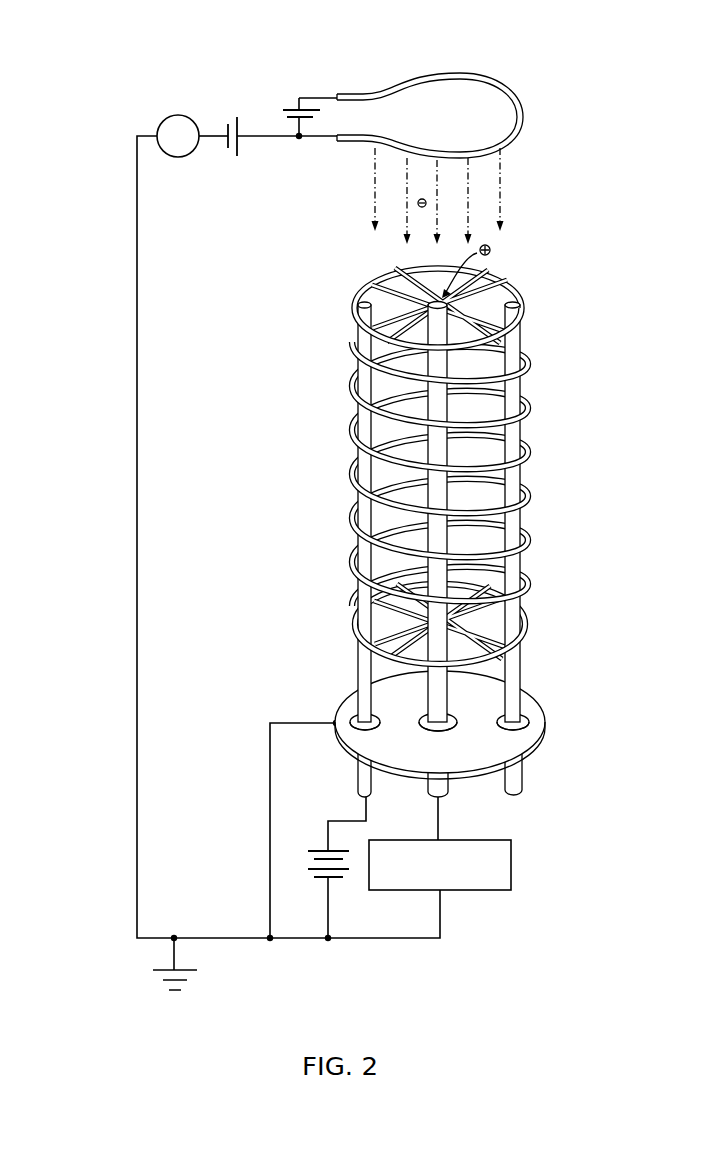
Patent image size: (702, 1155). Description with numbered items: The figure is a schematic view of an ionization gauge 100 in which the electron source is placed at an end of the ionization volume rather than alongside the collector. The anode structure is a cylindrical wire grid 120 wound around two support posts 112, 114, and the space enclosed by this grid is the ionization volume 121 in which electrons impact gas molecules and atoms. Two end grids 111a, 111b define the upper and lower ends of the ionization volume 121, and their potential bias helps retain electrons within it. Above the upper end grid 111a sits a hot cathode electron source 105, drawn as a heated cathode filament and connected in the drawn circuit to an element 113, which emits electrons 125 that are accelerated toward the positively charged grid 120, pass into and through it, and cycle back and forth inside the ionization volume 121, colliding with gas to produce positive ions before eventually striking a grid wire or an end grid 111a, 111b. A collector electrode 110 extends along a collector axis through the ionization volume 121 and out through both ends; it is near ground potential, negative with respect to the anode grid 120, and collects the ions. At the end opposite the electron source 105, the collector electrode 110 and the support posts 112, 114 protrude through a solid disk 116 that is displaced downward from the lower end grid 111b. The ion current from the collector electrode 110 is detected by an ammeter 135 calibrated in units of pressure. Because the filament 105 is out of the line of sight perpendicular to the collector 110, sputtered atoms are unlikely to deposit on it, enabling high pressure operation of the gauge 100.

The ionization gauge 100 is at (113, 56).
The hot cathode electron source 105 is at (482, 73).
The collector electrode 110 is at (428, 301).
The end grid 111a is at (497, 287).
The end grid 111b is at (495, 659).
The support post 112 is at (362, 302).
The battery 113 is at (282, 108).
The support post 114 is at (513, 302).
The solid disk 116 is at (543, 740).
The cylindrical wire grid 120 is at (531, 364).
The ionization volume 121 is at (487, 419).
The electrons 125 is at (500, 192).
The ammeter 135 is at (477, 893).